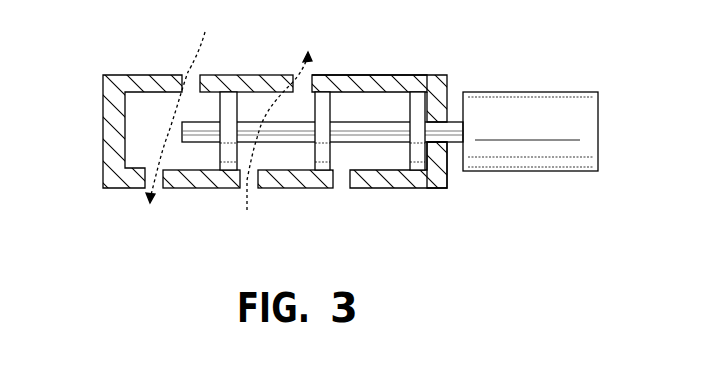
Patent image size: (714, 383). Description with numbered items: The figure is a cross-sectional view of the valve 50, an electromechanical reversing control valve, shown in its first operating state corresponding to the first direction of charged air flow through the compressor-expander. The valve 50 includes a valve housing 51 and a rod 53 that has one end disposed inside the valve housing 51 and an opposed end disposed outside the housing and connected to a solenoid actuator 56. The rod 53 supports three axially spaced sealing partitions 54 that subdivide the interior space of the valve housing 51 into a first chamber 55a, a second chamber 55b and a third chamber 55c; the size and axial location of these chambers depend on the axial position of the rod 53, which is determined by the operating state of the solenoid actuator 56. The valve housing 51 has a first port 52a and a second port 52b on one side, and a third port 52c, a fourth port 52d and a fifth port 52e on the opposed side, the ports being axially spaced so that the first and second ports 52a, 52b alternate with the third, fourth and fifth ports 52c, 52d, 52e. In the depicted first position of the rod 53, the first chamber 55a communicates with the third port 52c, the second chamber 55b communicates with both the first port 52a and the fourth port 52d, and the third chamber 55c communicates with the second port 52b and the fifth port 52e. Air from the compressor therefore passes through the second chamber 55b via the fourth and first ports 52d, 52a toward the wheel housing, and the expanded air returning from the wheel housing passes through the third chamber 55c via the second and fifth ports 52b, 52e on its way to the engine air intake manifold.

The valve 50 is at (88, 81).
The valve housing 51 is at (430, 85).
The first port 52a is at (310, 80).
The second port 52b is at (195, 82).
The third port 52c is at (352, 178).
The fourth port 52d is at (242, 183).
The fifth port 52e is at (145, 182).
The rod 53 is at (382, 135).
The sealing partitions 54 is at (238, 107).
The first chamber 55a is at (367, 104).
The second chamber 55b is at (273, 157).
The third chamber 55c is at (150, 108).
The solenoid actuator 56 is at (538, 136).